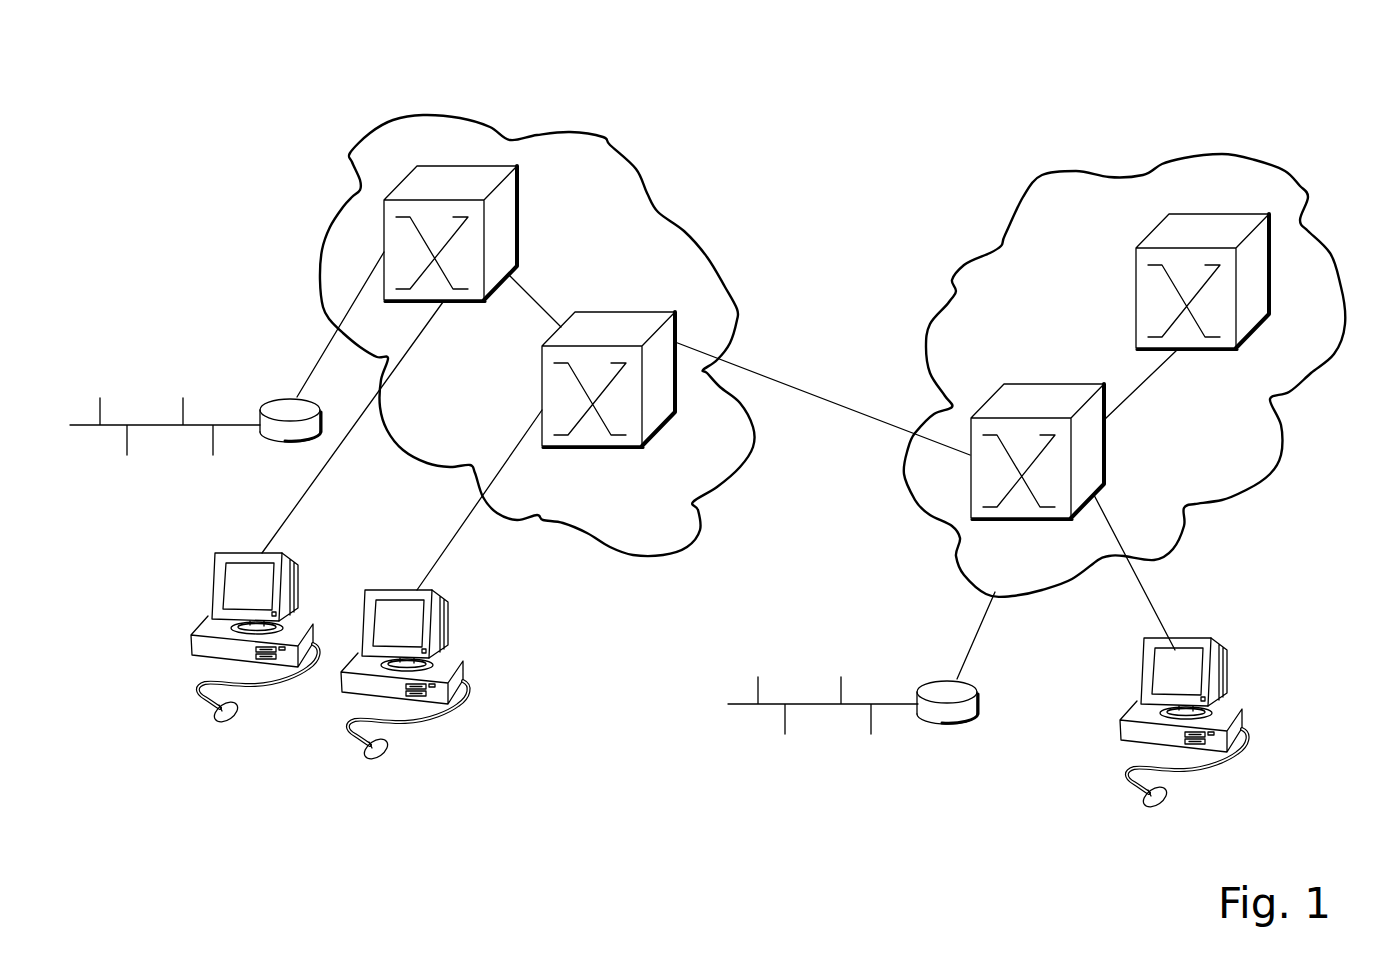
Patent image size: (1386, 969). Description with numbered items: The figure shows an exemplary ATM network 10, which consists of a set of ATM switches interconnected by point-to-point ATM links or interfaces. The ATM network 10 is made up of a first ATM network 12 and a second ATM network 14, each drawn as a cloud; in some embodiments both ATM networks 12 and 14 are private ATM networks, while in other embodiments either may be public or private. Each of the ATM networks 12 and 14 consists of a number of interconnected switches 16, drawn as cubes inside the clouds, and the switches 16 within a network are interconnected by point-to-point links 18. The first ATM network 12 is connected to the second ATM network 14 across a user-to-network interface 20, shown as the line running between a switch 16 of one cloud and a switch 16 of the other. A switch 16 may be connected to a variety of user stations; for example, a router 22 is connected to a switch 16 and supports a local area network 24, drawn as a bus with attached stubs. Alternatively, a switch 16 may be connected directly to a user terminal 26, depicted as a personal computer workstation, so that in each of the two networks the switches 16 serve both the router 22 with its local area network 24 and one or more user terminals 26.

The ATM network 10 is at (1297, 93).
The first ATM network 12 is at (643, 171).
The second ATM network 14 is at (1162, 166).
The switch 16 is at (521, 195).
The point-to-point link 18 is at (533, 300).
The user-to-network interface 20 is at (825, 398).
The router 22 is at (267, 400).
The local area network 24 is at (113, 427).
The user terminal 26 is at (213, 568).